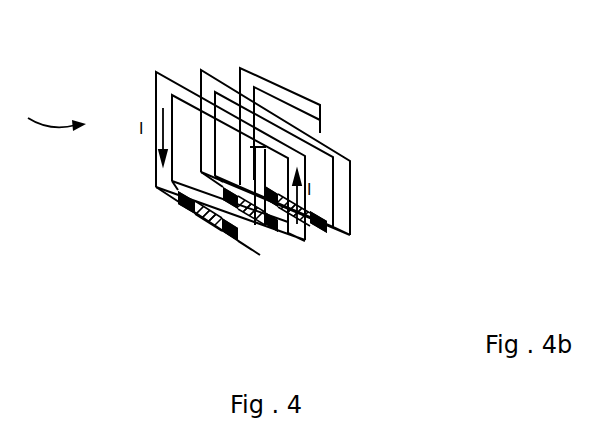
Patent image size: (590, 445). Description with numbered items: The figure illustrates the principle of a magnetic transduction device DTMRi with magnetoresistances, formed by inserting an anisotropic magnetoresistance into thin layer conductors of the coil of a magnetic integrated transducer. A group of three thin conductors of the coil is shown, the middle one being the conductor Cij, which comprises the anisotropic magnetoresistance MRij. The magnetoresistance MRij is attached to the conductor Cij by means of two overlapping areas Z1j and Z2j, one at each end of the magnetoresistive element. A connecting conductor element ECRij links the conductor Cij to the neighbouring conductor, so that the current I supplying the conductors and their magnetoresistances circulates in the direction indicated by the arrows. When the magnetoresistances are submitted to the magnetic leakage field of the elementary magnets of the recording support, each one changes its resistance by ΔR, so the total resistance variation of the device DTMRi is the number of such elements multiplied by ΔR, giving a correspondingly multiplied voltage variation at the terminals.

The connecting conductor element ECRij is at (165, 80).
The magnetic transduction device DTMRi is at (55, 111).
The overlapping area Z1j is at (222, 192).
The anisotropic magnetoresistance MRij is at (247, 222).
The overlapping area Z2j is at (275, 238).
The thin conductor Cij is at (298, 242).